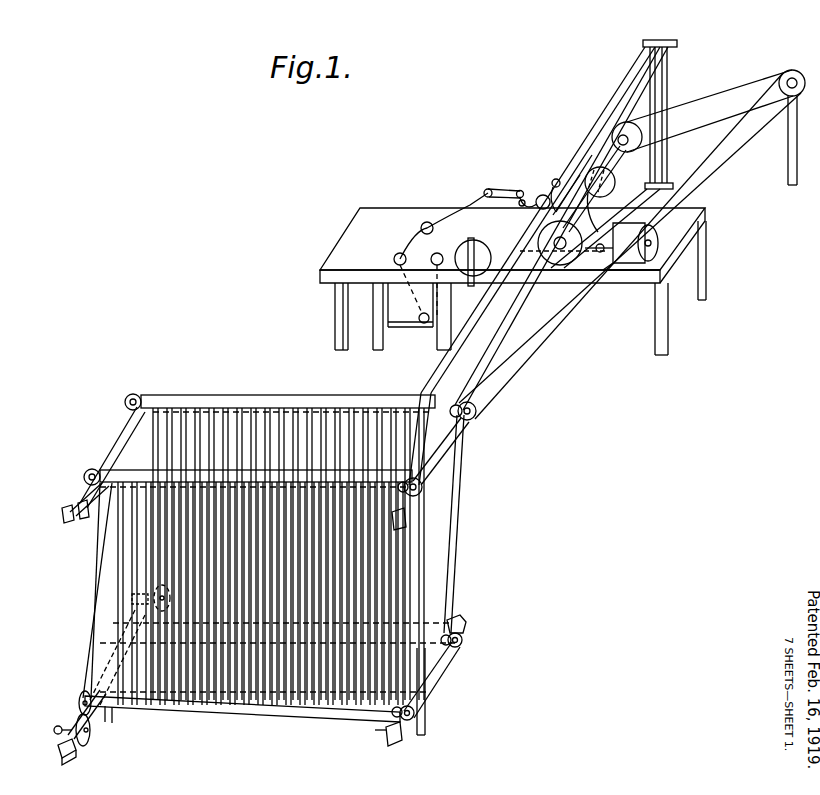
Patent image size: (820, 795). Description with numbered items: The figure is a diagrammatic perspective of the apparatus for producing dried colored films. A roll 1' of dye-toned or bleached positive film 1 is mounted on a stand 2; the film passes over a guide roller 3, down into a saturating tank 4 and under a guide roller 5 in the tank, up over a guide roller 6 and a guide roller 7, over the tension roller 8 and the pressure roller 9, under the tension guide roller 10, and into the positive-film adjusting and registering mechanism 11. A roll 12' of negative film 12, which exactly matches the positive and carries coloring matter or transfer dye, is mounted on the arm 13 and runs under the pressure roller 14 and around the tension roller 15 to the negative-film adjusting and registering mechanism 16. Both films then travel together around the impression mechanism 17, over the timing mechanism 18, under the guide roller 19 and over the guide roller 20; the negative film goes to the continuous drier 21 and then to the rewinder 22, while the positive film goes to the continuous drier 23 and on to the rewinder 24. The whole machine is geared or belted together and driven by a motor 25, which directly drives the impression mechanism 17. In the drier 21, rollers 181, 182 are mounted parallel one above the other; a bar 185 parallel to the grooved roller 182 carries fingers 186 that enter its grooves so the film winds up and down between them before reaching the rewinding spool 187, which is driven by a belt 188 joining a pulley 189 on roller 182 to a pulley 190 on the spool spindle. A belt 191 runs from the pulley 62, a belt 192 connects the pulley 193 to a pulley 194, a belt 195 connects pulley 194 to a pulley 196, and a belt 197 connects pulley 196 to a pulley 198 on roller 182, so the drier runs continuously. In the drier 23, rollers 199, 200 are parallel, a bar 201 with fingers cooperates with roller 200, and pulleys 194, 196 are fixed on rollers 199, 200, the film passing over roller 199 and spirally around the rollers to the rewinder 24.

The positive film 1 is at (444, 214).
The roll of positive film 1' is at (480, 251).
The stand 2 is at (478, 262).
The guide roller 3 is at (440, 255).
The saturating tank 4 is at (399, 326).
The guide roller 5 is at (423, 325).
The guide roller 6 is at (395, 257).
The guide roller 7 is at (421, 227).
The tension roller 8 is at (489, 189).
The pressure roller 9 is at (520, 190).
The tension guide roller 10 is at (512, 206).
The positive-film adjusting and registering mechanism 11 is at (542, 193).
The negative film 12 is at (530, 288).
The roll of negative film 12' is at (617, 180).
The arm 13 is at (606, 212).
The pressure roller 14 is at (585, 168).
The tension roller 15 is at (568, 185).
The negative-film adjusting and registering mechanism 16 is at (553, 178).
The impression mechanism 17 is at (556, 268).
The timing mechanism 18 is at (588, 280).
The guide roller 19 is at (665, 186).
The guide roller 20 is at (677, 43).
The continuous drier 21 is at (424, 487).
The rewinder 22 is at (58, 738).
The continuous drier 23 is at (470, 441).
The rewinder 24 is at (165, 585).
The motor 25 is at (656, 244).
The pulley 62 is at (628, 120).
The roller 181 is at (110, 476).
The roller 182 is at (176, 720).
The bar 185 is at (325, 708).
The fingers 186 is at (270, 710).
The rewinding spool 187 is at (90, 746).
The belt 188 is at (72, 710).
The pulley 189 is at (86, 697).
The pulley 190 is at (55, 728).
The belt 191 is at (705, 103).
The belt 192 is at (728, 150).
The pulley 193 is at (783, 72).
The pulley 194 is at (478, 410).
The belt 195 is at (465, 493).
The pulley 196 is at (463, 643).
The belt 197 is at (458, 667).
The pulley 198 is at (412, 722).
The roller 199 is at (222, 395).
The roller 200 is at (450, 623).
The bar 201 is at (455, 640).